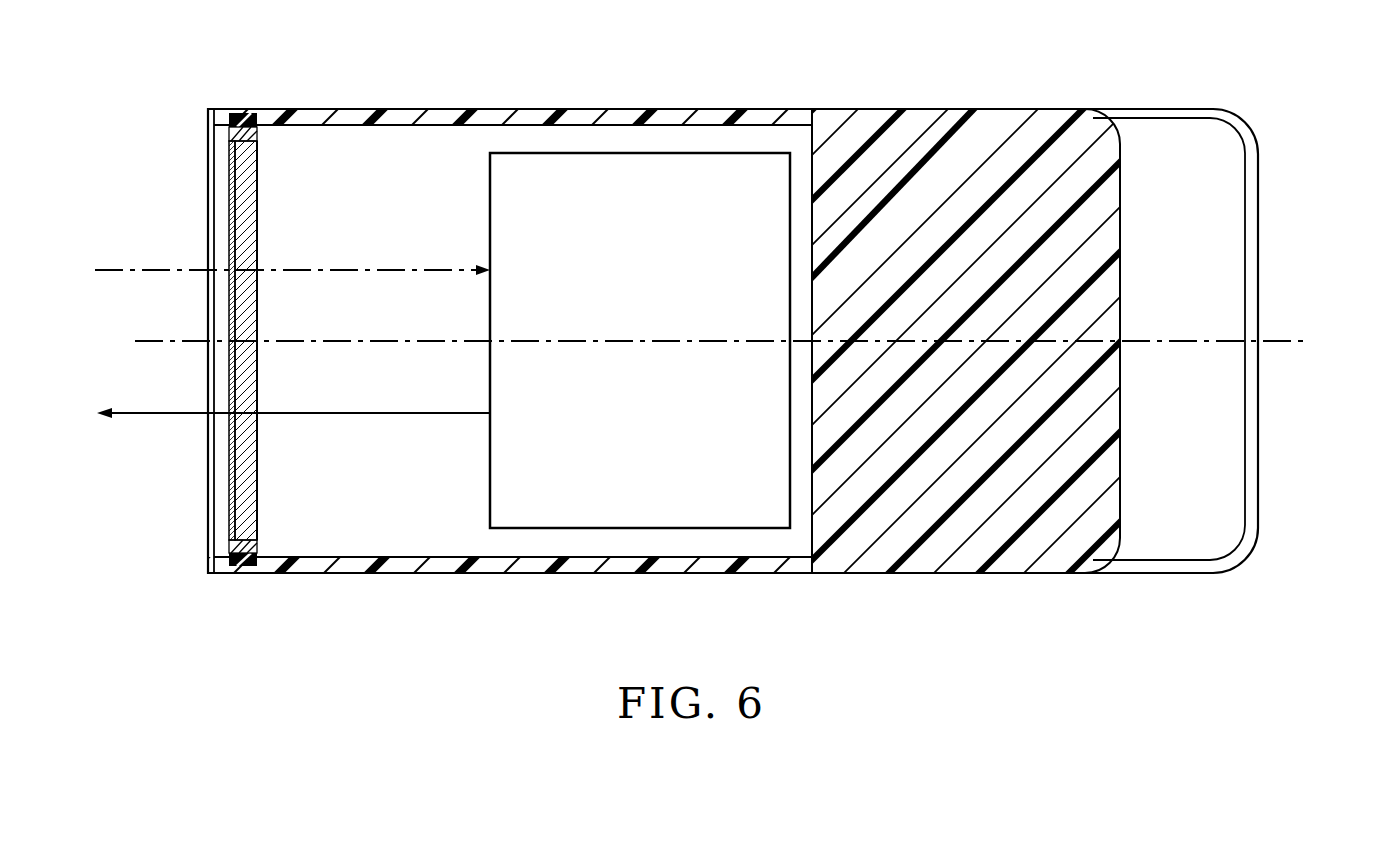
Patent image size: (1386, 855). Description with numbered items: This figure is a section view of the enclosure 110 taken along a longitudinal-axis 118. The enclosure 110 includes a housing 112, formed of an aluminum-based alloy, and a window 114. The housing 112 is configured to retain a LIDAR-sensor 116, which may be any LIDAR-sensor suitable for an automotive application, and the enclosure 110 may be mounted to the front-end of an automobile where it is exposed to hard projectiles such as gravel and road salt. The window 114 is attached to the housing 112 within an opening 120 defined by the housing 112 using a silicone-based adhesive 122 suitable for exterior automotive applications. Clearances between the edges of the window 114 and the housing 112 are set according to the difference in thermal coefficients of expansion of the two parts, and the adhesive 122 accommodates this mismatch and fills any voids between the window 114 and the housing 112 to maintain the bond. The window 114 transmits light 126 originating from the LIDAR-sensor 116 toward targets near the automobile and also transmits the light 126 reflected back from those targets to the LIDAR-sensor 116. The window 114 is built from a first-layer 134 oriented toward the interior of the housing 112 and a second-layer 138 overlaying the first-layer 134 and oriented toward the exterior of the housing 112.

The enclosure 110 is at (266, 66).
The housing 112 is at (1003, 565).
The window 114 is at (226, 236).
The LIDAR-sensor 116 is at (725, 165).
The longitudinal-axis 118 is at (1277, 342).
The opening 120 is at (210, 174).
The silicone-based adhesive 122 is at (228, 121).
The light 126 is at (88, 262).
The first-layer 134 is at (257, 474).
The second-layer 138 is at (234, 493).